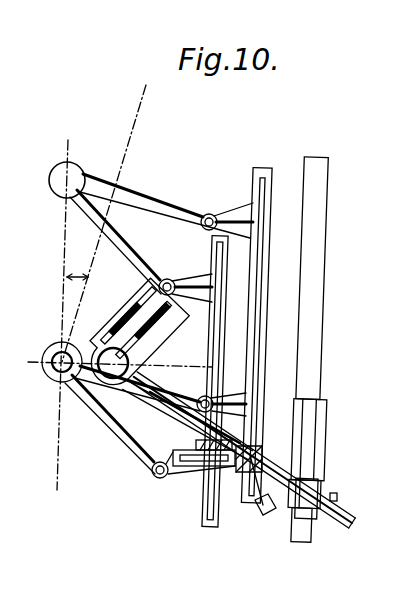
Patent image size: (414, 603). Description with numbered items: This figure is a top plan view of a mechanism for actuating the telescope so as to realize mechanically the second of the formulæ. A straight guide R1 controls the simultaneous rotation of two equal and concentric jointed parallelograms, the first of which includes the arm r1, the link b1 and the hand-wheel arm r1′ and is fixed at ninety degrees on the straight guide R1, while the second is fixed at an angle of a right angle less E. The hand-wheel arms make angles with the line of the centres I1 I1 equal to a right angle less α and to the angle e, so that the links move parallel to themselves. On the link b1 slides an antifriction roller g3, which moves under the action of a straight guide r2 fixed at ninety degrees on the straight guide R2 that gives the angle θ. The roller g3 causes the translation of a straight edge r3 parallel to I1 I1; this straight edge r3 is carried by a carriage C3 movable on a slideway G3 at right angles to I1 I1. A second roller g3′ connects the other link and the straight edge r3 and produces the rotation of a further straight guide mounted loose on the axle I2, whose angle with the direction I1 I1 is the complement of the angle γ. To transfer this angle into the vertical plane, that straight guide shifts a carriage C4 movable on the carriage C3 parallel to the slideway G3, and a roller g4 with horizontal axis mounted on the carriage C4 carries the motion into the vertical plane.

The angle e is at (77, 269).
The line of centres I1 I1 is at (57, 365).
The axle I2 is at (118, 363).
The arm r1 is at (128, 438).
The hand-wheel arm r1′ is at (112, 231).
The straight guide r2 is at (233, 510).
The straight edge r3 is at (188, 472).
The straight guide R1 is at (118, 312).
The straight guide R2 is at (165, 322).
The link b1 is at (203, 517).
The antifriction roller g3 is at (203, 473).
The second roller g3′ is at (258, 454).
The roller g4 is at (338, 497).
The slideway G3 is at (316, 340).
The carriage C3 is at (320, 428).
The carriage C4 is at (312, 482).